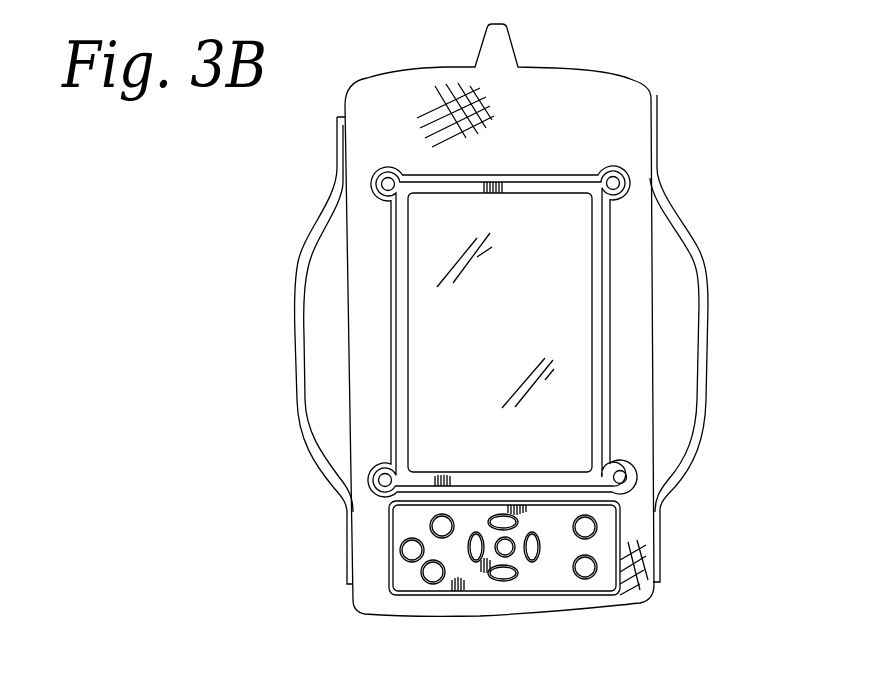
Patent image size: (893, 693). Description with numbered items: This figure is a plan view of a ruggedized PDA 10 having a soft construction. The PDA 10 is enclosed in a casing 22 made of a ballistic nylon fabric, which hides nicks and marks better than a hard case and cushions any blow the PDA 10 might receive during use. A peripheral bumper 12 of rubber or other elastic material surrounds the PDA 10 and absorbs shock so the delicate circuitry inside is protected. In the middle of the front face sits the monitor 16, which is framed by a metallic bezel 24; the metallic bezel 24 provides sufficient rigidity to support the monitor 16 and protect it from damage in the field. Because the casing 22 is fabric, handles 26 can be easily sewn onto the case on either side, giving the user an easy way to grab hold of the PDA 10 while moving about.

The ruggedized PDA 10 is at (646, 33).
The peripheral bumper 12 is at (655, 98).
The monitor 16 is at (593, 425).
The casing 22 is at (635, 139).
The metallic bezel 24 is at (402, 175).
The handles 26 is at (297, 383).